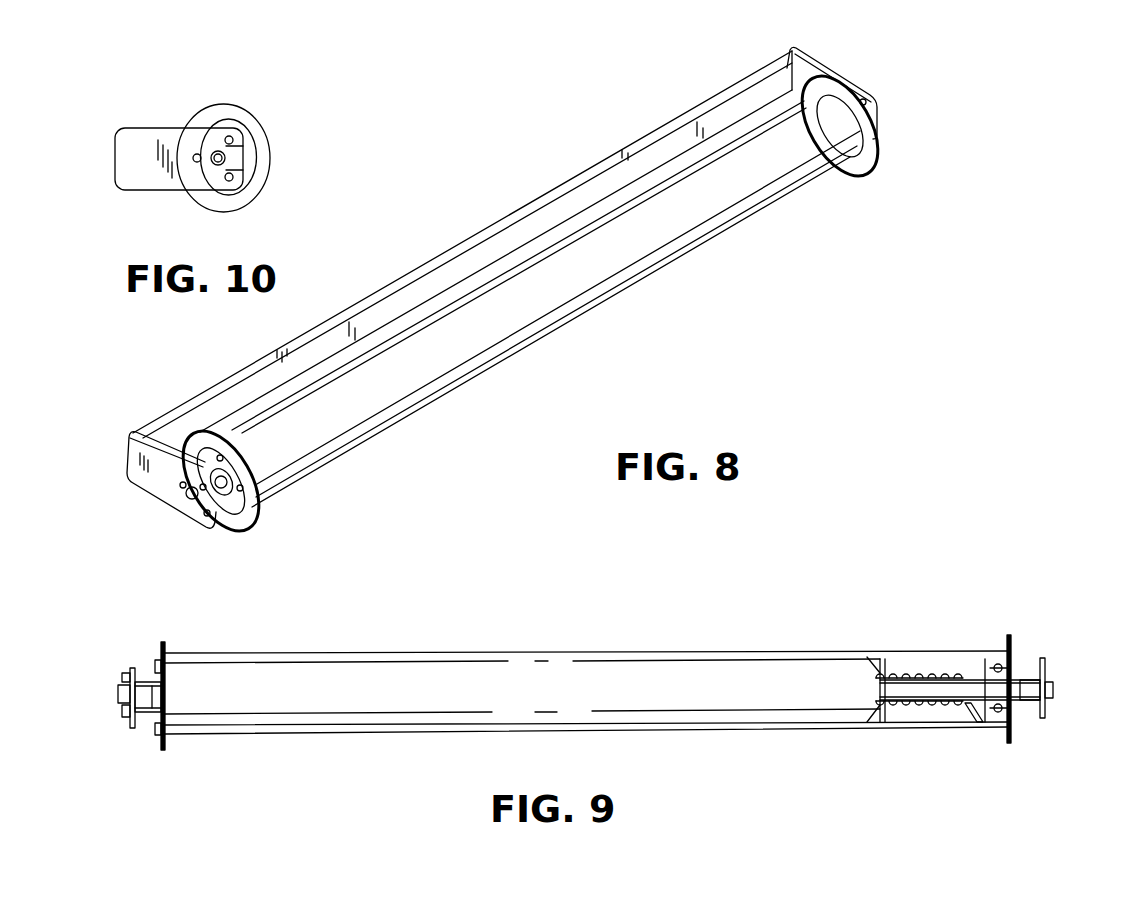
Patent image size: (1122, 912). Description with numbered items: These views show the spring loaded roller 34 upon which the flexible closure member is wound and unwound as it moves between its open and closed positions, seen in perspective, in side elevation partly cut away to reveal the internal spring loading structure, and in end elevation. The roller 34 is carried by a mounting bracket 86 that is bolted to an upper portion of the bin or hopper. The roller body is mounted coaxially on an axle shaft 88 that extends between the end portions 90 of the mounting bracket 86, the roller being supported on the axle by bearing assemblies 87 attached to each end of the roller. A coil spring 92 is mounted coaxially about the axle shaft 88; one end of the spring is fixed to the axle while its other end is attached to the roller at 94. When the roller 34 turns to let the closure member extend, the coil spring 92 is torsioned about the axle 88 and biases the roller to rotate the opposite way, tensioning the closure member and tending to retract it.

In FIG. 10, the spring loaded roller 34 is at (243, 122).
In FIG. 8, the spring loaded roller 34 is at (641, 258).
In FIG. 9, the spring loaded roller 34 is at (455, 663).
In FIG. 8, the mounting bracket 86 is at (425, 287).
In FIG. 10, the end portions 90 is at (148, 137).
In FIG. 8, the end portions 90 is at (157, 473).
In FIG. 9, the end portions 90 is at (1040, 657).
In FIG. 9, the coil spring 92 is at (923, 672).
In FIG. 9, the bearing assemblies 87 is at (997, 665).
In FIG. 9, the axle shaft 88 is at (988, 690).
In FIG. 9, the attachment point of coil spring to roller 94 is at (978, 725).